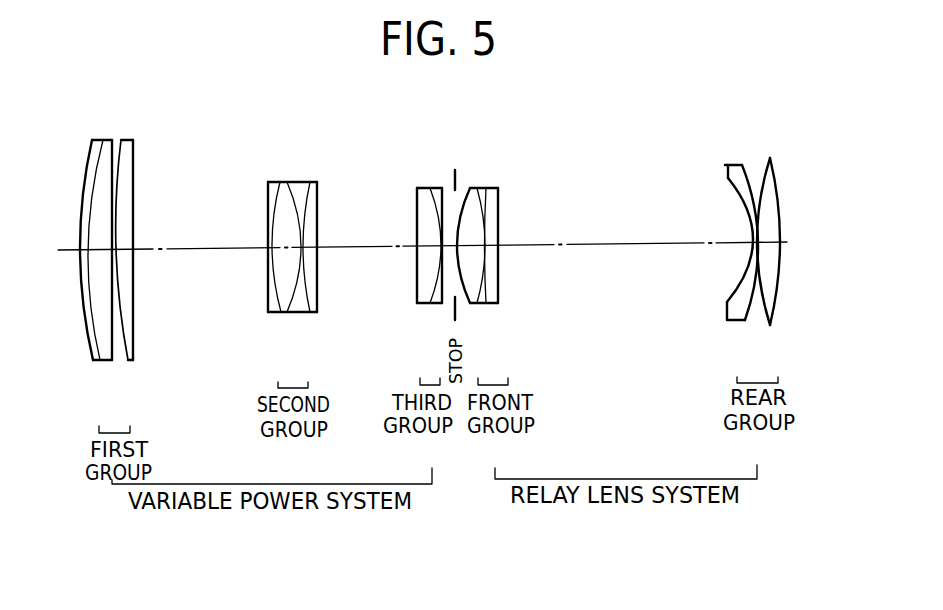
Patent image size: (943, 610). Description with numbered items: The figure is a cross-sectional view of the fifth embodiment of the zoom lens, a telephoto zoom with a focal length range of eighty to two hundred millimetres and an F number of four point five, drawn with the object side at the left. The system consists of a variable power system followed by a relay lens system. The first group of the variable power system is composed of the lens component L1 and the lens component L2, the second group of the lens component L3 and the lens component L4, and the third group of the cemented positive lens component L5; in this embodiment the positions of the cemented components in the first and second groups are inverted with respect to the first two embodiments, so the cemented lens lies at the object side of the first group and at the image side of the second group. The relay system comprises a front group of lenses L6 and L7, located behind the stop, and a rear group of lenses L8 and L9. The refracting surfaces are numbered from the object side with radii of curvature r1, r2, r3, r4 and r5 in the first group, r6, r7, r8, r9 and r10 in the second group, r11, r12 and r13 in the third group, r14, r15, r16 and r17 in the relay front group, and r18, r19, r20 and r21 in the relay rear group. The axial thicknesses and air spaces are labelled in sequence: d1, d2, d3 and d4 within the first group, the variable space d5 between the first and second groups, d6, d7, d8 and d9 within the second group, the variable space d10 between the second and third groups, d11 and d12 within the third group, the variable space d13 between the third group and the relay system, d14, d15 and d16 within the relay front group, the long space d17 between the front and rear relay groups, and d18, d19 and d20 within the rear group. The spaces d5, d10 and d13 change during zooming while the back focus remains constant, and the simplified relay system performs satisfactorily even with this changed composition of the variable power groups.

The radius of curvature of first refracting surface r1 is at (91, 140).
The radius of curvature of second refracting surface r2 is at (103, 140).
The radius of curvature of third refracting surface r3 is at (112, 140).
The radius of curvature of fourth refracting surface r4 is at (122, 140).
The radius of curvature of fifth refracting surface r5 is at (133, 140).
The radius of curvature of sixth refracting surface r6 is at (268, 182).
The radius of curvature of seventh refracting surface r7 is at (280, 182).
The radius of curvature of eighth refracting surface r8 is at (287, 182).
The radius of curvature of ninth refracting surface r9 is at (310, 182).
The radius of curvature of tenth refracting surface r10 is at (317, 182).
The radius of curvature of eleventh refracting surface r11 is at (418, 188).
The radius of curvature of twelfth refracting surface r12 is at (431, 188).
The radius of curvature of thirteenth refracting surface r13 is at (442, 188).
The radius of curvature of fourteenth refracting surface r14 is at (467, 188).
The radius of curvature of fifteenth refracting surface r15 is at (477, 188).
The radius of curvature of sixteenth refracting surface r16 is at (486, 188).
The radius of curvature of seventeenth refracting surface r17 is at (498, 188).
The radius of curvature of eighteenth refracting surface r18 is at (724, 178).
The radius of curvature of nineteenth refracting surface r19 is at (743, 167).
The radius of curvature of twentieth refracting surface r20 is at (763, 170).
The radius of curvature of twenty-first refracting surface r21 is at (775, 164).
The axial thickness d1 is at (84, 245).
The axial thickness d2 is at (100, 240).
The air space d3 is at (118, 230).
The axial thickness d4 is at (124, 240).
The air space d5 is at (207, 248).
The axial thickness d6 is at (269, 240).
The air space d7 is at (284, 236).
The axial thickness d8 is at (304, 228).
The axial thickness d9 is at (313, 252).
The air space d10 is at (381, 248).
The axial thickness d11 is at (427, 236).
The axial thickness d12 is at (438, 222).
The air space d13 is at (438, 254).
The axial thickness d14 is at (467, 236).
The air space d15 is at (485, 228).
The axial thickness d16 is at (494, 250).
The air space d17 is at (628, 242).
The axial thickness d18 is at (743, 226).
The air space d19 is at (757, 246).
The axial thickness d20 is at (768, 233).
The positive lens component L1 is at (92, 252).
The positive lens component L2 is at (141, 252).
The negative lens component L3 is at (277, 248).
The negative lens component L4 is at (327, 248).
The cemented positive lens component L5 is at (415, 251).
The lens L6 is at (474, 251).
The lens L7 is at (510, 251).
The lens L8 is at (729, 244).
The lens L9 is at (772, 244).